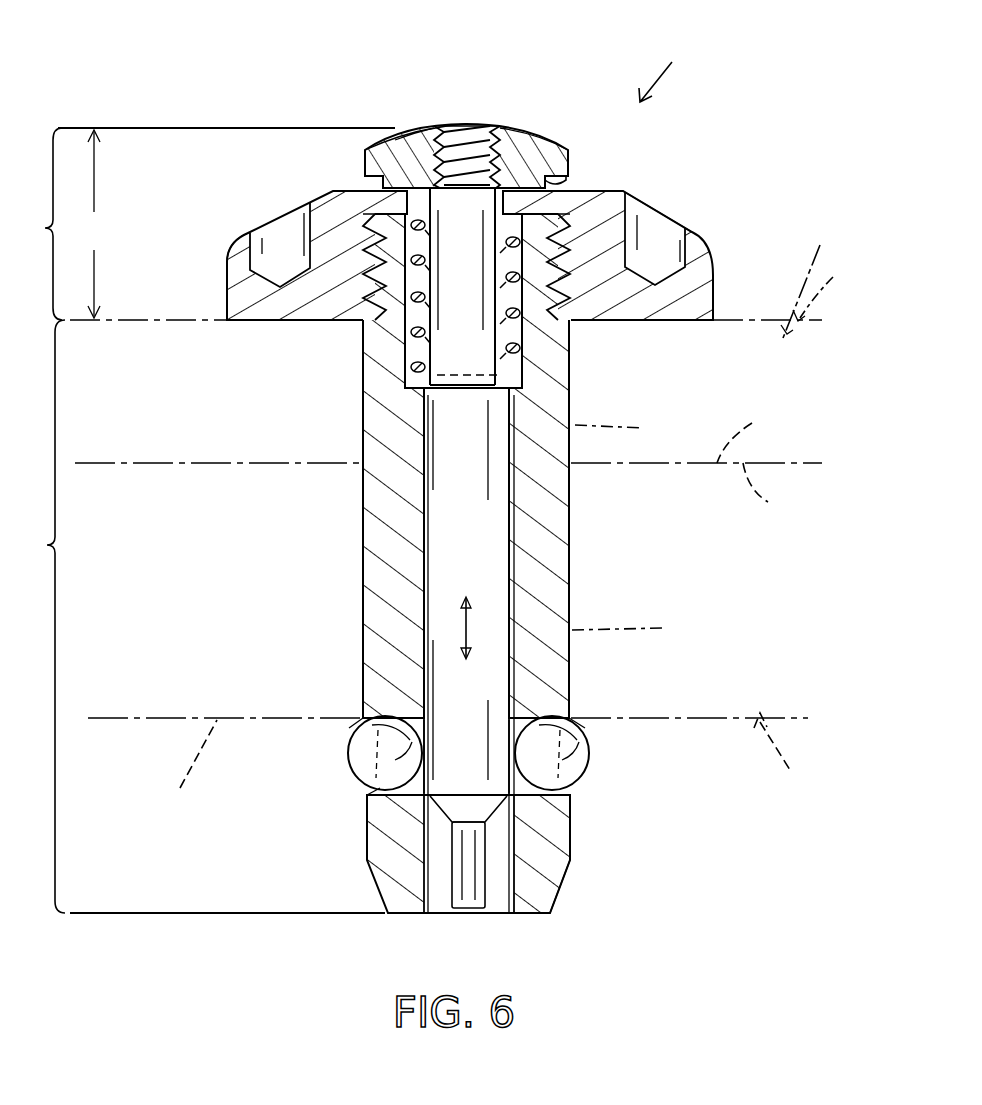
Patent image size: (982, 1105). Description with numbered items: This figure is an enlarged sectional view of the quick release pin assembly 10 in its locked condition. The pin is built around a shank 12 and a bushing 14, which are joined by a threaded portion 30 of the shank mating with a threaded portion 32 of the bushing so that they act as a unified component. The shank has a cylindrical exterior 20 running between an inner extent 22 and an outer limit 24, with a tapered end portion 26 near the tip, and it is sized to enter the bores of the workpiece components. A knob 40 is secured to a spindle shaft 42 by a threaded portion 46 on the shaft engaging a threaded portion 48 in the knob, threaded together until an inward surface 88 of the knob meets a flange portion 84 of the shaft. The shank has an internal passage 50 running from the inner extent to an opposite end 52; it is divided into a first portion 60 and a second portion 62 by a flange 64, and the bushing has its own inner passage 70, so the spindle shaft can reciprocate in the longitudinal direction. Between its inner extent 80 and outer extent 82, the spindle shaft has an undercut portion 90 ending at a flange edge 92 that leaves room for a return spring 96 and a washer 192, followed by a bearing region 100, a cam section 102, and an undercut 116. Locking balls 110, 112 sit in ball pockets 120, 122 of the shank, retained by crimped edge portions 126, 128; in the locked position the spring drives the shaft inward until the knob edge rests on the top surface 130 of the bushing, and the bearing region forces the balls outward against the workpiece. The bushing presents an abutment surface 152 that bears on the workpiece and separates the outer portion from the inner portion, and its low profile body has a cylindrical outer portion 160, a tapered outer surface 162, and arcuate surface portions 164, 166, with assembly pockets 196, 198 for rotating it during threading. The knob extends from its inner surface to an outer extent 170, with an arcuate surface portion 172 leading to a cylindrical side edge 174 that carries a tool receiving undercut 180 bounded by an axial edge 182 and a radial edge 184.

The quick release pin assembly 10 is at (670, 68).
The shank 12 is at (590, 558).
The bushing 14 is at (652, 194).
The exterior 20 is at (571, 596).
The inner extent 22 is at (575, 856).
The outer limit 24 is at (572, 326).
The tapered end portion 26 is at (562, 892).
The threaded portion 30 is at (562, 268).
The threaded portion 32 is at (655, 290).
The knob 40 is at (520, 128).
The spindle shaft 42 is at (516, 512).
The threaded portion 46 is at (456, 146).
The threaded portion 48 is at (478, 138).
The internal passage 50 is at (424, 522).
The opposite end 52 is at (608, 212).
The first portion 60 is at (385, 348).
The second portion 62 is at (424, 592).
The flange 64 is at (530, 382).
The inner passage 70 is at (440, 196).
The inner extent 80 is at (480, 913).
The outer extent 82 is at (466, 126).
The flange portion 84 is at (502, 176).
The inward surface 88 is at (333, 191).
The undercut portion 90 is at (415, 318).
The flange edge 92 is at (466, 392).
The return spring 96 is at (305, 321).
The bearing region 100 is at (498, 668).
The cam section 102 is at (500, 808).
The locking ball 110 is at (356, 766).
The locking ball 112 is at (586, 760).
The undercut 116 is at (460, 862).
The ball pocket 120 is at (348, 750).
The ball pocket 122 is at (576, 745).
The crimped edge portion 126 is at (370, 798).
The crimped edge portion 128 is at (575, 718).
The top surface 130 is at (620, 186).
The abutment surface 152 is at (690, 322).
The outer portion 160 is at (228, 290).
The outer surface 162 is at (262, 228).
The arcuate surface portion 164 is at (238, 258).
The arcuate surface portion 166 is at (275, 215).
The outer extent 170 is at (438, 126).
The arcuate surface portion 172 is at (446, 140).
The side edge 174 is at (420, 172).
The undercut 180 is at (400, 170).
The axial edge 182 is at (432, 184).
The radial edge 184 is at (562, 180).
The washer 192 is at (420, 389).
The assembly pocket 196 is at (285, 232).
The assembly pocket 198 is at (672, 255).